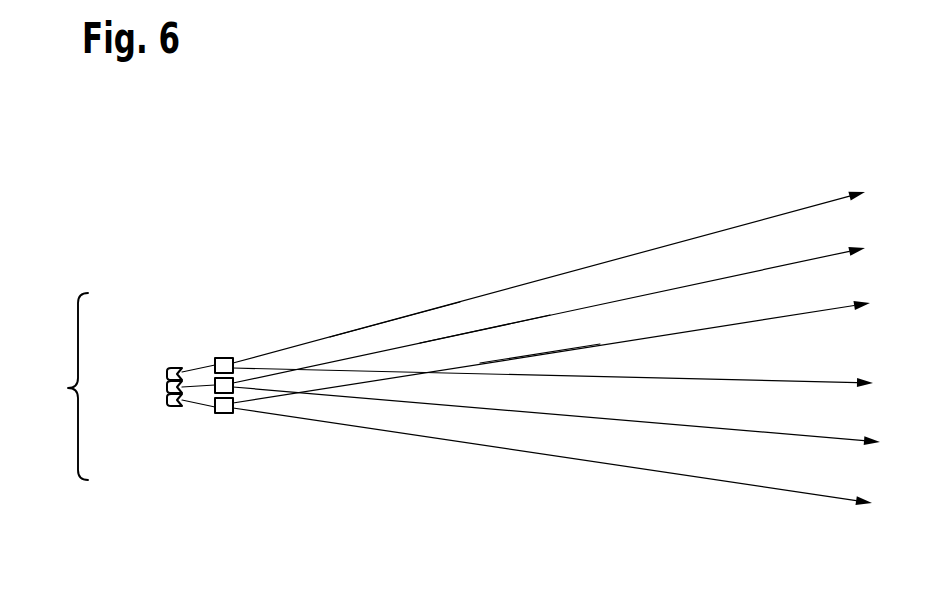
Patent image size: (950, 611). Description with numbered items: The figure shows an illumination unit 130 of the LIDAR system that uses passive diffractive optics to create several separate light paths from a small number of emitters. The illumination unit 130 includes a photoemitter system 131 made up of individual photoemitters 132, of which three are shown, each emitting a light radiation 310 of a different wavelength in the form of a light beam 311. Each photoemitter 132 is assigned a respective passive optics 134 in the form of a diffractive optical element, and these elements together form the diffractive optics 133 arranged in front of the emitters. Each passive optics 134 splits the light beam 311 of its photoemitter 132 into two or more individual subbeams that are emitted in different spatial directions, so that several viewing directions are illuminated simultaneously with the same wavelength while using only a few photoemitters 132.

The illumination unit 130 is at (116, 524).
The photoemitter system 131 is at (97, 387).
The photoemitters 132 is at (135, 392).
The optical element array 133 is at (262, 337).
The passive optics 134 is at (264, 389).
The light radiation 310 is at (465, 262).
The light beam 311 is at (504, 344).